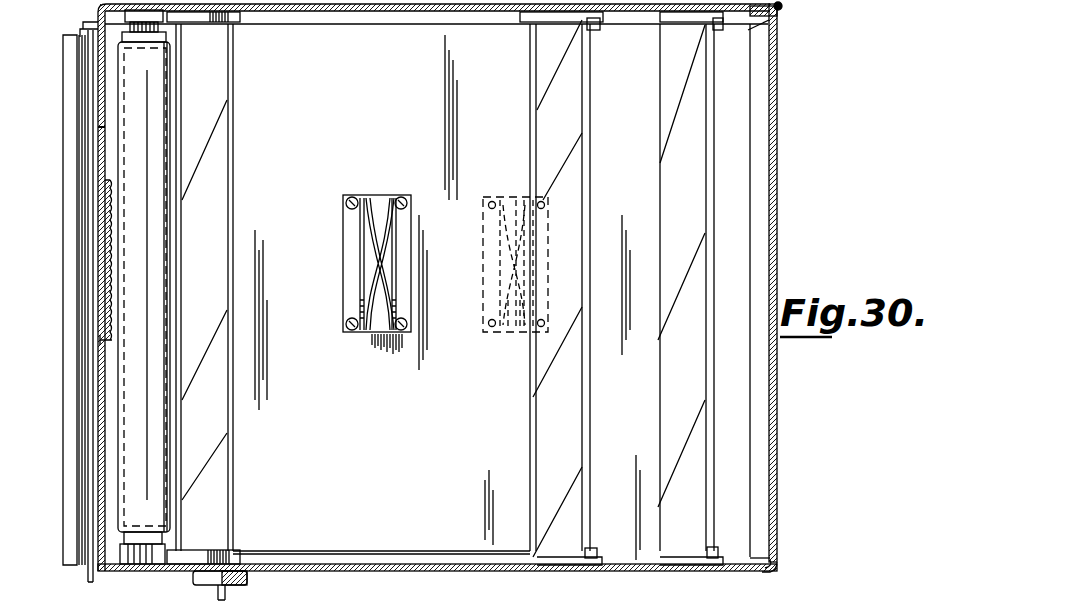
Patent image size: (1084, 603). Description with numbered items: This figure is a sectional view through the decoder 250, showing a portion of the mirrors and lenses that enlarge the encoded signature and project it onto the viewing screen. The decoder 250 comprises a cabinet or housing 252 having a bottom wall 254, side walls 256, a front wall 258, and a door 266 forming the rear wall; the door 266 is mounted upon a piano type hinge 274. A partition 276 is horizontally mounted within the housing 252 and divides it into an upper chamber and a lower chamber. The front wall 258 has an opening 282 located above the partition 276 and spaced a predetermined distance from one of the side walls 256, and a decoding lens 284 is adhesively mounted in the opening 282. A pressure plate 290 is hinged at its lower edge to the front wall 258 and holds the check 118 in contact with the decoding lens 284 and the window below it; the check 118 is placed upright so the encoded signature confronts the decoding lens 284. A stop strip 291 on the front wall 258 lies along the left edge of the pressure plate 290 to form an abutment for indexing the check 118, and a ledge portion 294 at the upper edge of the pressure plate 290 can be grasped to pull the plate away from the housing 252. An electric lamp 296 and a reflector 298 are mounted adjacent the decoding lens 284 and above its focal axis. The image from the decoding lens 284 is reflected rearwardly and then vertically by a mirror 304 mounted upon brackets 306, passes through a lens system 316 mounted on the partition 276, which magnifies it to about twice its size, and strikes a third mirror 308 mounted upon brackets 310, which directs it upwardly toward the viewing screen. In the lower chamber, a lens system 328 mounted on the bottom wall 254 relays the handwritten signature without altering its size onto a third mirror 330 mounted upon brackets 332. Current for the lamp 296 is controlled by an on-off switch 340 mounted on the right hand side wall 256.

The check 118 is at (88, 576).
The decoder 250 is at (782, 74).
The cabinet or housing 252 is at (408, 574).
The bottom wall 254 is at (640, 184).
The side walls 256 is at (392, 26).
The front wall 258 is at (98, 127).
The door 266 is at (778, 385).
The piano type hinge 274 is at (780, 26).
The partition 276 is at (388, 476).
The opening 282 is at (100, 338).
The decoding lens 284 is at (112, 302).
The pressure plate 290 is at (80, 237).
The stop strip 291 is at (86, 29).
The ledge portion 294 is at (70, 95).
The electric lamp 296 is at (176, 118).
The reflector 298 is at (170, 72).
The mirror 304 is at (236, 62).
The brackets 306 is at (218, 24).
The third mirror 308 is at (668, 436).
The brackets 310 is at (717, 30).
The lens system 316 is at (377, 195).
The lens system 328 is at (495, 197).
The third 45° mirror 330 is at (570, 370).
The brackets 332 is at (585, 27).
The on-off switch 340 is at (212, 598).